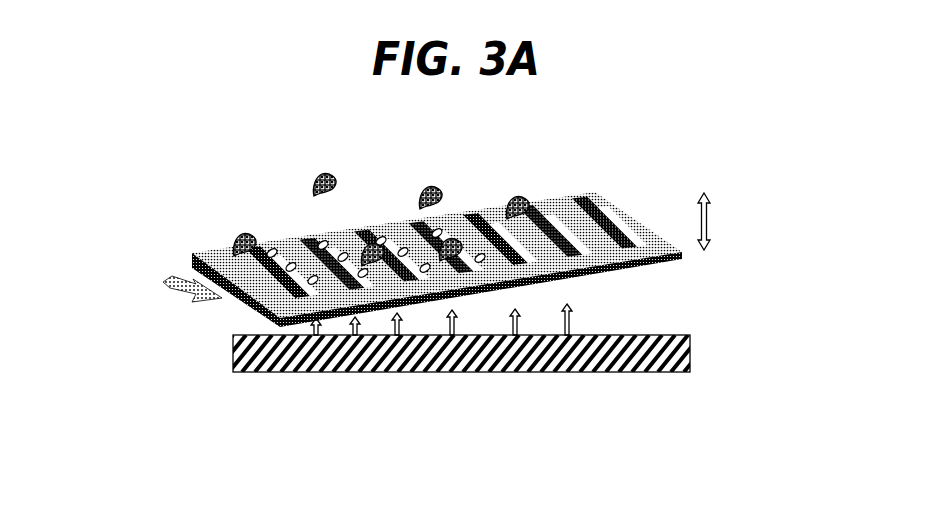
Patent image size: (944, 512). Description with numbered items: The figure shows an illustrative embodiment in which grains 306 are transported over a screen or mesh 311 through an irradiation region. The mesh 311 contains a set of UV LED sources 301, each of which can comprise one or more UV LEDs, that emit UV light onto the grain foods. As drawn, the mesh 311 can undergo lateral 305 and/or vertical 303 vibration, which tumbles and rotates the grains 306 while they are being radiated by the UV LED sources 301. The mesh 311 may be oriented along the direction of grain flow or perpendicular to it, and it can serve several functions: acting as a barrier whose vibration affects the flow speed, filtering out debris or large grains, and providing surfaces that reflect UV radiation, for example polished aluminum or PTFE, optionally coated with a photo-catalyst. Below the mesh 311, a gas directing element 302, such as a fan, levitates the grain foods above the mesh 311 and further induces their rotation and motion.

The UV LED sources 301 is at (269, 246).
The gas directing element 302 is at (276, 373).
The vertical vibration 303 is at (710, 218).
The lateral vibration 305 is at (190, 289).
The grains 306 is at (424, 186).
The mesh 311 is at (582, 197).